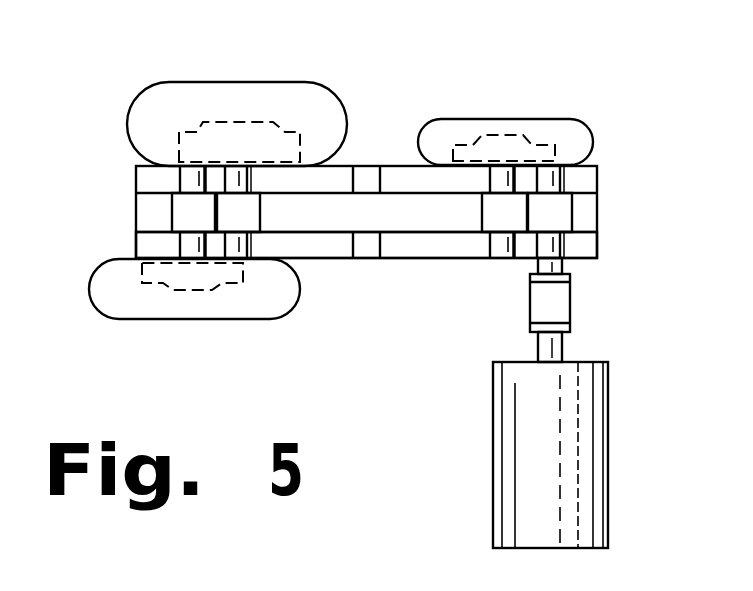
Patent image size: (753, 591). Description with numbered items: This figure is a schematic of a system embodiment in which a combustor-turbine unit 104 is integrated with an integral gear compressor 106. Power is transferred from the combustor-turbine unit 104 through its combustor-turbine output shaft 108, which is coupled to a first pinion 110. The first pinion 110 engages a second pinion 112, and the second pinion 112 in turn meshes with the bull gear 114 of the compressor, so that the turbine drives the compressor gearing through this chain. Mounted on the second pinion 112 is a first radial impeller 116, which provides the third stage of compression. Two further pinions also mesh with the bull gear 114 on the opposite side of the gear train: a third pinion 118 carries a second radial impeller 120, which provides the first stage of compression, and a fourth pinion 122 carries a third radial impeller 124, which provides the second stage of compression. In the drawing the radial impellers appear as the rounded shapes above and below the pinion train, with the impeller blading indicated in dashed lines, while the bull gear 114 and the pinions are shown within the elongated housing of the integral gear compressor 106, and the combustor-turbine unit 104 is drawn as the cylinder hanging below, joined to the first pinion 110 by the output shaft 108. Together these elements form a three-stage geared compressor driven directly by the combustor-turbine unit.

The combustor-turbine unit 104 is at (493, 430).
The integral gear compressor 106 is at (129, 202).
The combustor-turbine output shaft 108 is at (566, 357).
The first pinion 110 is at (573, 198).
The second pinion 112 is at (477, 213).
The bull gear 114 is at (330, 233).
The first radial impeller 116 is at (505, 133).
The third pinion 118 is at (251, 213).
The second radial impeller 120 is at (223, 120).
The fourth pinion 122 is at (172, 218).
The third radial impeller 124 is at (177, 291).